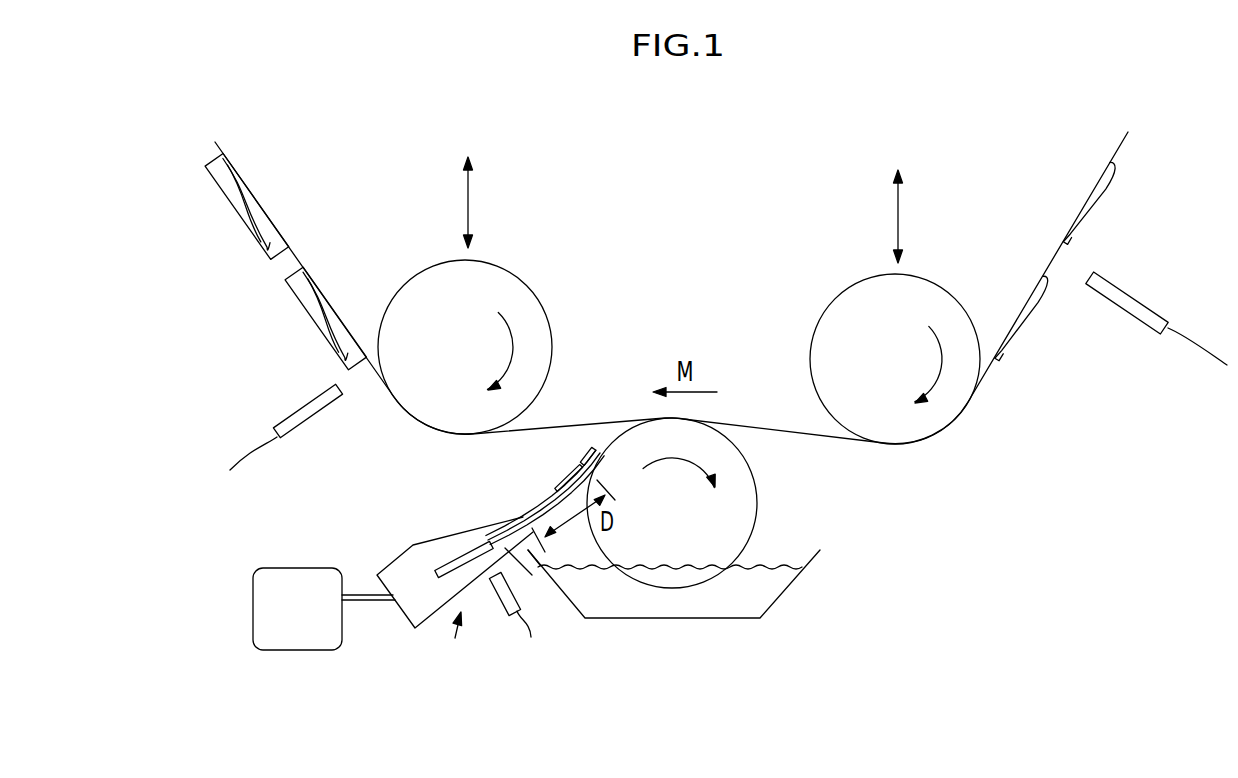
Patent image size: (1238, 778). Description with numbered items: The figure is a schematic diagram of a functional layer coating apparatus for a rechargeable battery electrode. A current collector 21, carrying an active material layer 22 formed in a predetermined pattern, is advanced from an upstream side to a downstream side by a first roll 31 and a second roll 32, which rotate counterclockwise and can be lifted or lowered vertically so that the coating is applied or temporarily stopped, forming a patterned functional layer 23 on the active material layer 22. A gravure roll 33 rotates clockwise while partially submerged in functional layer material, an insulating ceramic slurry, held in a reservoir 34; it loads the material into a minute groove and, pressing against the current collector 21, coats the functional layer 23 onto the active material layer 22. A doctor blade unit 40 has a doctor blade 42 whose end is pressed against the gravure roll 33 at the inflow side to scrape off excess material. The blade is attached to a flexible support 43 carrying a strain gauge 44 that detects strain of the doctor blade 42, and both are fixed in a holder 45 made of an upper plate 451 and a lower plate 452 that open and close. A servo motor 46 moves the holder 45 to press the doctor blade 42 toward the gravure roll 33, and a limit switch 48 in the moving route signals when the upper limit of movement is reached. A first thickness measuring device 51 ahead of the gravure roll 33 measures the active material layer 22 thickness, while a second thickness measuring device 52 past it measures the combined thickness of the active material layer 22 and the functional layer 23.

The current collector 21 is at (587, 423).
The active material layer 22 is at (265, 223).
The functional layer 23 is at (232, 193).
The first roll 31 is at (512, 293).
The second roll 32 is at (847, 312).
The gravure roll 33 is at (657, 512).
The reservoir 34 is at (742, 607).
The doctor blade unit 40 is at (428, 598).
The doctor blade 42 is at (577, 532).
The support 43 is at (540, 514).
The strain gauge 44 is at (583, 472).
The holder 45 is at (415, 635).
The upper plate 451 is at (488, 532).
The lower plate 452 is at (530, 556).
The servo motor 46 is at (307, 638).
The limit switch 48 is at (495, 607).
The first thickness measuring device 51 is at (1148, 312).
The second thickness measuring device 52 is at (292, 422).